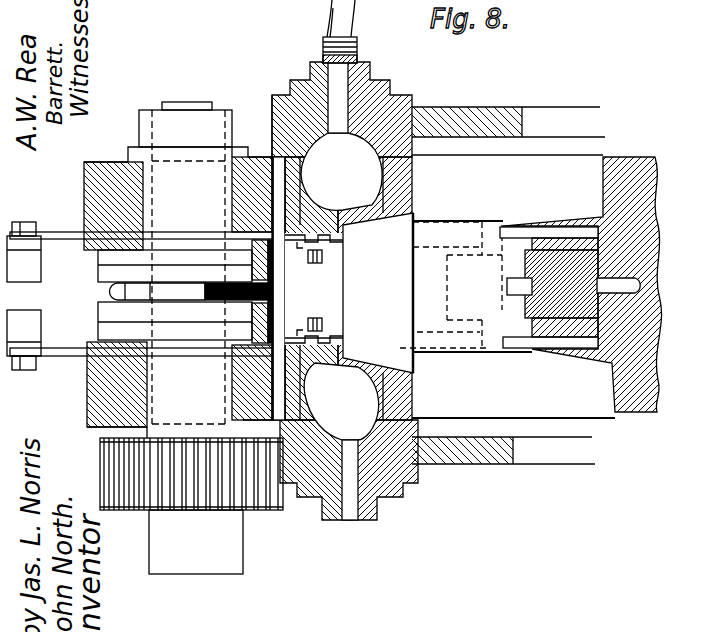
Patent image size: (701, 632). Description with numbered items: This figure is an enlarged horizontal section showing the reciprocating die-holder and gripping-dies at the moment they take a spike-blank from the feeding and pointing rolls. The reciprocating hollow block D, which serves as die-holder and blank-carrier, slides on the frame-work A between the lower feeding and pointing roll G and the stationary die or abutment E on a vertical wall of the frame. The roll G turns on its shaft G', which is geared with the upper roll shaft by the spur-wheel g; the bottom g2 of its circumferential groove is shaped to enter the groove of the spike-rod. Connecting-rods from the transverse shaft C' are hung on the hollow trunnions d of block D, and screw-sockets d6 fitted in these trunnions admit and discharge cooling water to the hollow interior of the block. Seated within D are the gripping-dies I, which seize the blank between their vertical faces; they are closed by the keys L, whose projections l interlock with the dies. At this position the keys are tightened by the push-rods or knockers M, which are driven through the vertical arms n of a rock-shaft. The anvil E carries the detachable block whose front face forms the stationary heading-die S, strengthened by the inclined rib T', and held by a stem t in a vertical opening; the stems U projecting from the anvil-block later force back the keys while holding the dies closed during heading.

The frame-work A is at (178, 281).
The shaft G' is at (191, 338).
The vertical arms n is at (24, 296).
The push-rods or knockers M is at (60, 348).
The lower feeding and pointing roll G is at (185, 291).
The bottom of circumferential groove g2 is at (112, 293).
The hollow trunnions or cylindrical projections d is at (372, 95).
The keys L is at (282, 288).
The reciprocating hollow block D is at (341, 286).
The screw-sockets d6 is at (322, 48).
The projections l is at (298, 291).
The gripping-dies I is at (317, 290).
The stationary heading-die S is at (525, 300).
The transverse shaft C' is at (513, 285).
The stationary die or abutment E is at (578, 222).
The stems U is at (530, 227).
The inclined rib T' is at (503, 290).
The stem t is at (672, 285).
The spur-wheel g is at (135, 510).